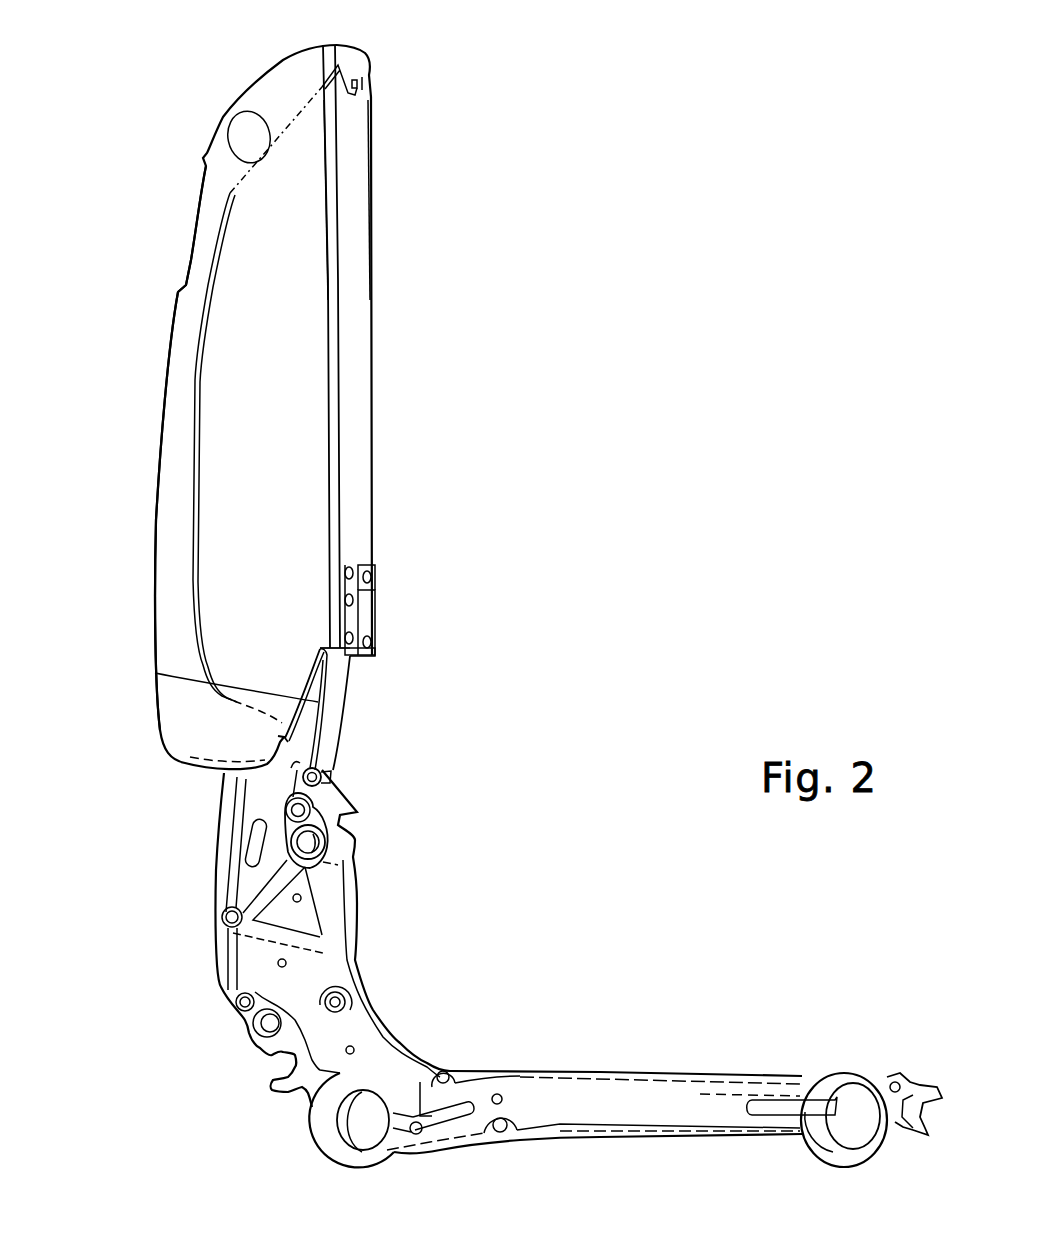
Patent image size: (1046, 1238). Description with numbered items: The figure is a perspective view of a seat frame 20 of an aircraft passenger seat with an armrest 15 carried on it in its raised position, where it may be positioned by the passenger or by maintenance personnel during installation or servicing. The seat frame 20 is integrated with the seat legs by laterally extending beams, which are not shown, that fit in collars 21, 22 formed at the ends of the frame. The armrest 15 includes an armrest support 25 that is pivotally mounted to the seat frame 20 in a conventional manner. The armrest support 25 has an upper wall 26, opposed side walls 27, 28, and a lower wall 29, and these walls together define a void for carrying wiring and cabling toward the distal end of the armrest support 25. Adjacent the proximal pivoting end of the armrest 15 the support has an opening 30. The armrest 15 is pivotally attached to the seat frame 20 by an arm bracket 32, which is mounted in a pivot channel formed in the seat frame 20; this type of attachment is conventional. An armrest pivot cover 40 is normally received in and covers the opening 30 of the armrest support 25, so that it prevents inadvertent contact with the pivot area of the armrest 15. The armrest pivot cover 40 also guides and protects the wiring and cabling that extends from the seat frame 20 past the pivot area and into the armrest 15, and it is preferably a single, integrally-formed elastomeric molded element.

The armrest 15 is at (222, 448).
The seat frame 20 is at (600, 1075).
The collar 21 is at (305, 1118).
The collar 22 is at (840, 1085).
The armrest support 25 is at (150, 573).
The upper wall 26 is at (175, 305).
The side wall 27 is at (292, 352).
The side wall 28 is at (300, 162).
The lower wall 29 is at (355, 236).
The opening 30 is at (155, 673).
The arm bracket 32 is at (377, 595).
The armrest pivot cover 40 is at (360, 711).